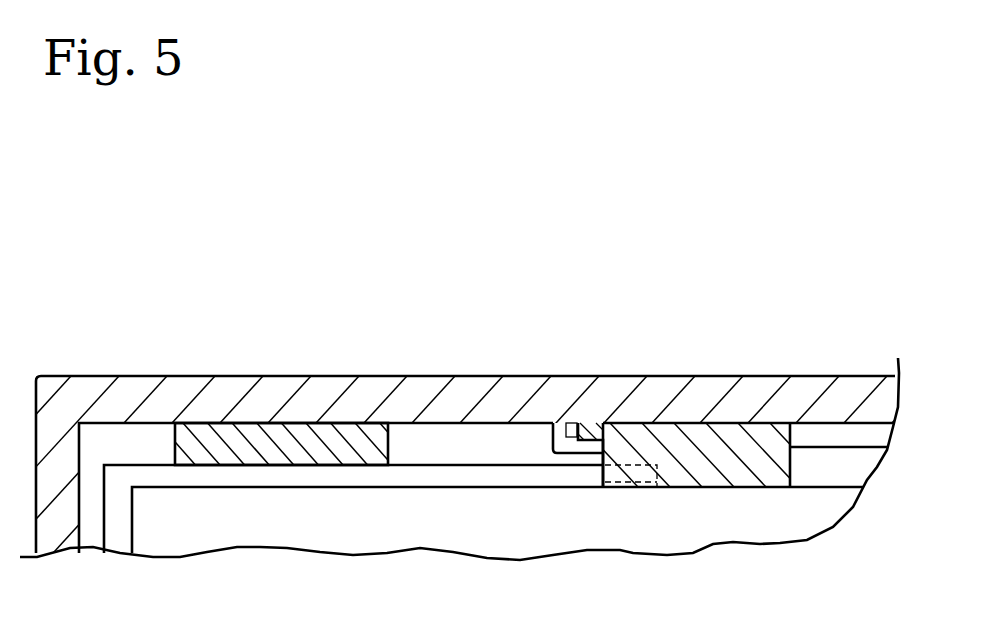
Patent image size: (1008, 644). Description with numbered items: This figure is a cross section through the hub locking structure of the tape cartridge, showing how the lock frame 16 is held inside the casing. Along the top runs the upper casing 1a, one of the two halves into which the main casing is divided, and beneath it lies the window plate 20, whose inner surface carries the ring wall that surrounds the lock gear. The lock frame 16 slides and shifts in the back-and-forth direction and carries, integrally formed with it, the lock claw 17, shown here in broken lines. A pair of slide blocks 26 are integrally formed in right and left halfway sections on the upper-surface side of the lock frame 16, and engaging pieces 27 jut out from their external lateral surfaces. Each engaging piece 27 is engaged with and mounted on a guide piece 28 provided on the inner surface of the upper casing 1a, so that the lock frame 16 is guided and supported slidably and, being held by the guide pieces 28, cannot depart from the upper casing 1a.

The upper casing 1a is at (108, 376).
The window plate 20 is at (253, 436).
The lock frame 16 is at (440, 496).
The guide piece 28 is at (592, 443).
The engaging piece 27 is at (590, 437).
The slide block 26 is at (745, 480).
The lock claw 17 is at (618, 492).